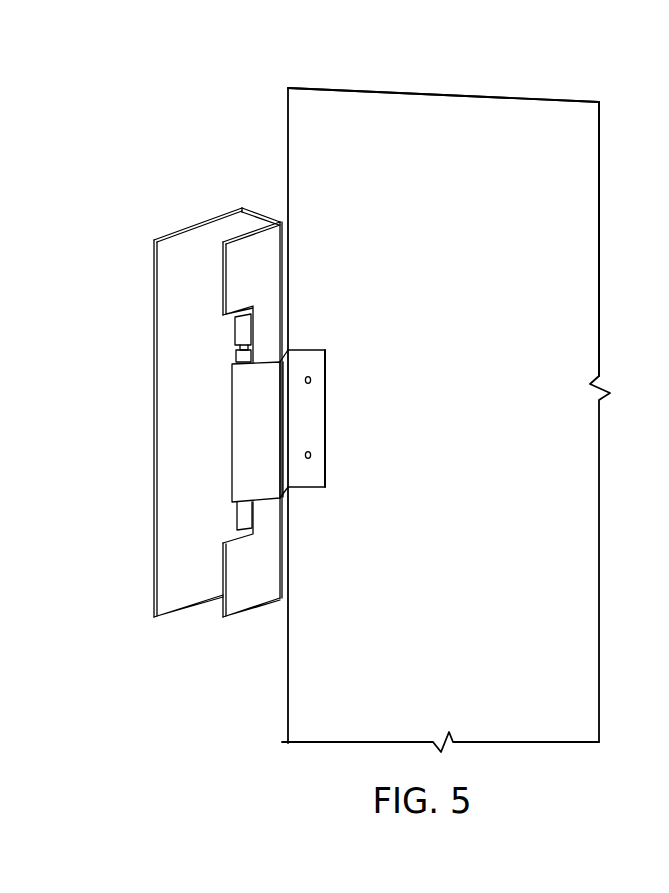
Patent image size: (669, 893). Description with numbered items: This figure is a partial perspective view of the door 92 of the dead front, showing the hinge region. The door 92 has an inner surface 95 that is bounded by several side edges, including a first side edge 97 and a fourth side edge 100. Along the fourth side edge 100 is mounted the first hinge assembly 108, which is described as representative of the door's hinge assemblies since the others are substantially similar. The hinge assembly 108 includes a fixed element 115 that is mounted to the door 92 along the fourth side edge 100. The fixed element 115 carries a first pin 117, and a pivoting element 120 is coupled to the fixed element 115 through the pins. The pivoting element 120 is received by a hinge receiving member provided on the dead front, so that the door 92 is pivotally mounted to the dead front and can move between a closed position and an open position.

The door 92 is at (475, 250).
The first side edge 97 is at (441, 93).
The inner surface 95 is at (453, 377).
The fourth side edge 100 is at (288, 154).
The first hinge assembly 108 is at (278, 538).
The first pin 117 is at (253, 357).
The fixed element 115 is at (303, 423).
The pivoting element 120 is at (190, 458).